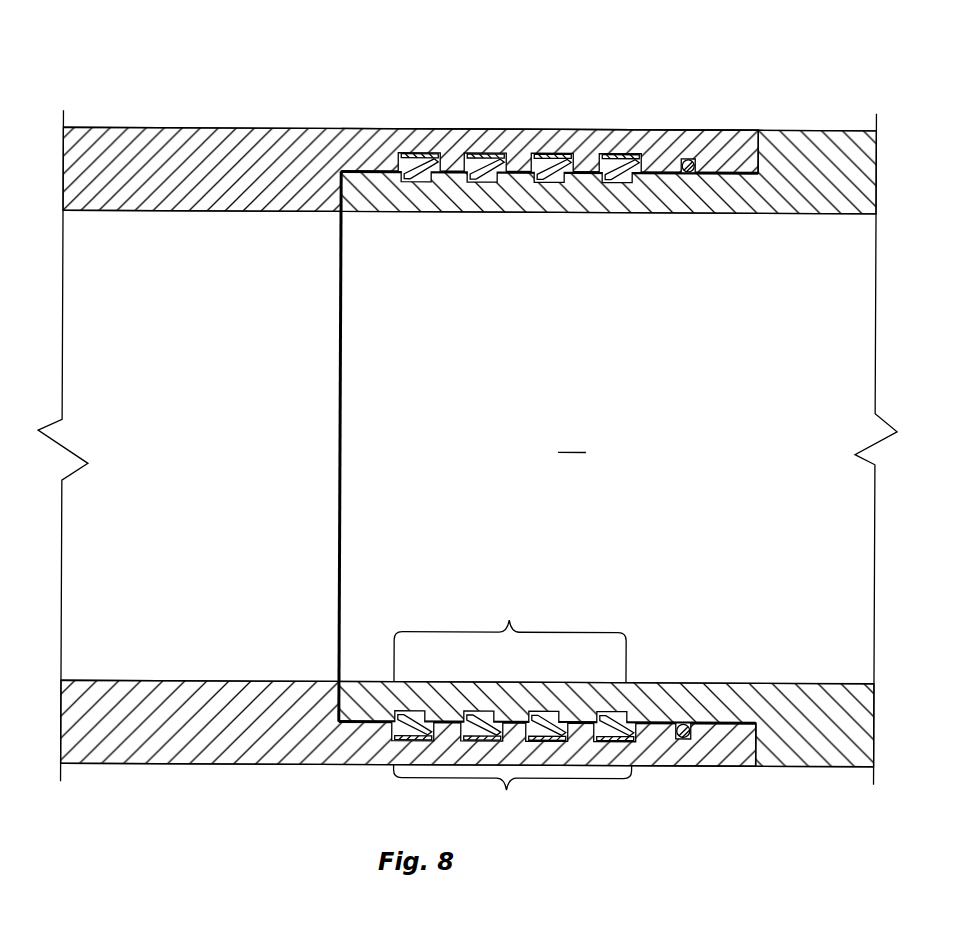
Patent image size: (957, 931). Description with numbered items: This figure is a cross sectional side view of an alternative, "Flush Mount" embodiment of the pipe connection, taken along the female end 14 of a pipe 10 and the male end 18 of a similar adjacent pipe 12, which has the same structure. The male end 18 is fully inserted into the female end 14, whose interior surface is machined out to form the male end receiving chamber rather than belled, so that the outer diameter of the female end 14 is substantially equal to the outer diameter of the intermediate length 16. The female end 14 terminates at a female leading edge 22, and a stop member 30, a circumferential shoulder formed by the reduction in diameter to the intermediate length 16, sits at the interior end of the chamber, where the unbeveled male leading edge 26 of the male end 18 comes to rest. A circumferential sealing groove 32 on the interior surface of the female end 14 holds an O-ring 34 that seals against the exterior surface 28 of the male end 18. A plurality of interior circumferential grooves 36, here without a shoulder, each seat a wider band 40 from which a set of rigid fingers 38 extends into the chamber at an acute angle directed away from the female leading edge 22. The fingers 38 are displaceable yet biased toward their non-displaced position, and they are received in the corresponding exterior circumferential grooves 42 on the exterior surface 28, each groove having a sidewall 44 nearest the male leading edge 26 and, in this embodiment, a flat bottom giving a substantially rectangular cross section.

The pipe 10 is at (108, 82).
The similar adjacent pipe 12 is at (837, 104).
The female end 14 is at (493, 129).
The intermediate length 16 is at (145, 128).
The male end 18 is at (572, 440).
The female leading edge 22 is at (758, 150).
The male leading edge 26 is at (343, 200).
The exterior surface 28 is at (590, 178).
The stop member 30 is at (337, 188).
The circumferential sealing groove 32 is at (697, 156).
The O-ring 34 is at (692, 174).
The interior circumferential grooves 36 is at (513, 771).
The rigid fingers 38 is at (548, 180).
The band 40 is at (552, 154).
The exterior circumferential grooves 42 is at (510, 635).
The sidewall 44 is at (565, 722).